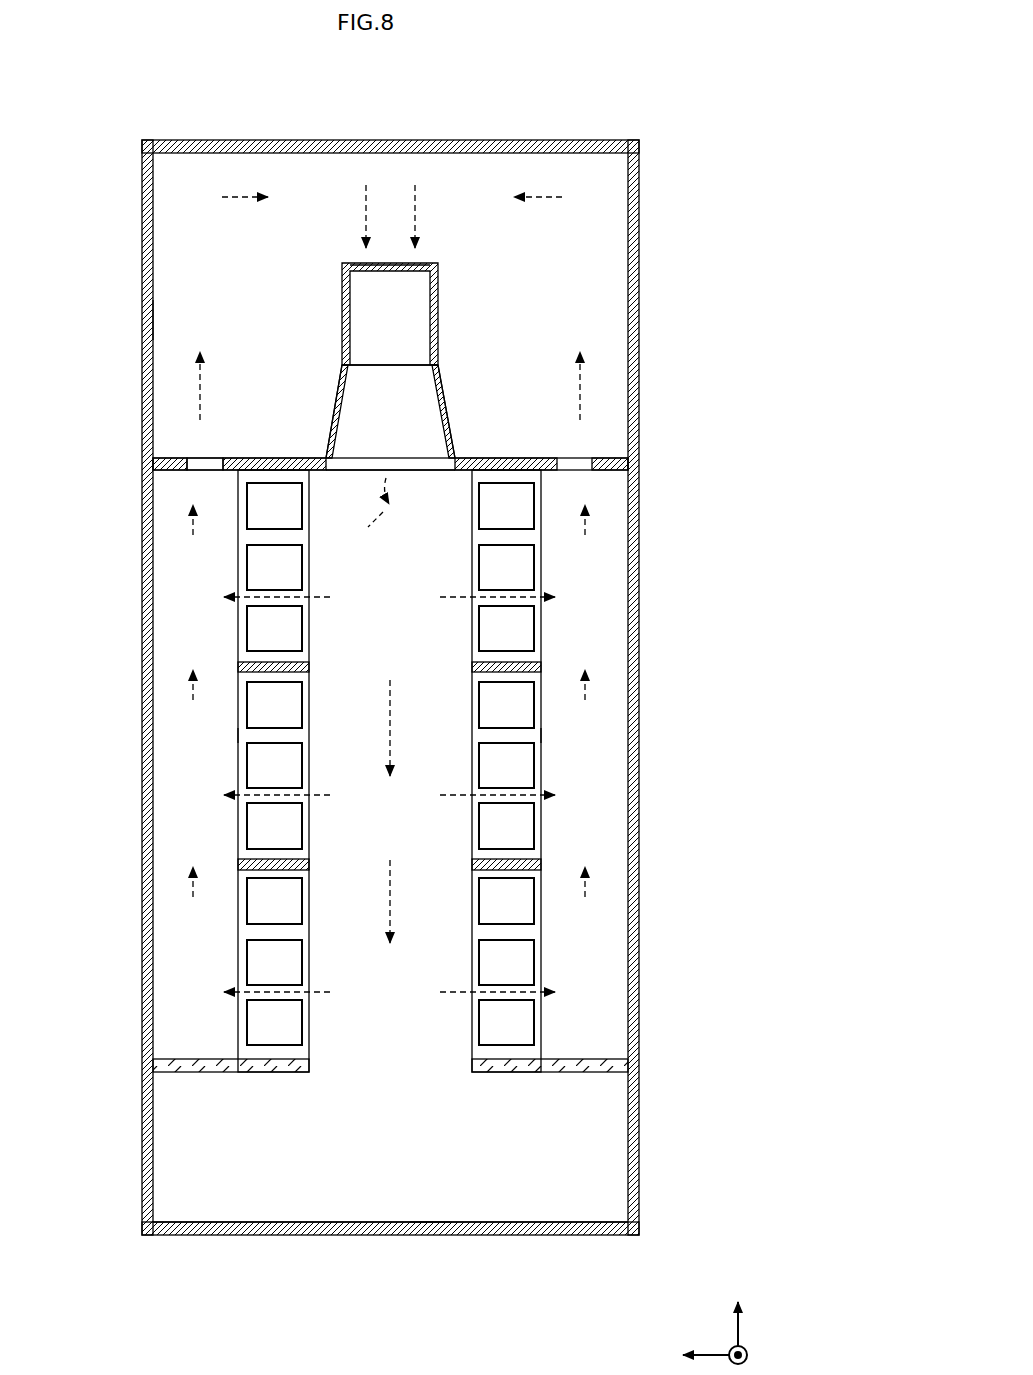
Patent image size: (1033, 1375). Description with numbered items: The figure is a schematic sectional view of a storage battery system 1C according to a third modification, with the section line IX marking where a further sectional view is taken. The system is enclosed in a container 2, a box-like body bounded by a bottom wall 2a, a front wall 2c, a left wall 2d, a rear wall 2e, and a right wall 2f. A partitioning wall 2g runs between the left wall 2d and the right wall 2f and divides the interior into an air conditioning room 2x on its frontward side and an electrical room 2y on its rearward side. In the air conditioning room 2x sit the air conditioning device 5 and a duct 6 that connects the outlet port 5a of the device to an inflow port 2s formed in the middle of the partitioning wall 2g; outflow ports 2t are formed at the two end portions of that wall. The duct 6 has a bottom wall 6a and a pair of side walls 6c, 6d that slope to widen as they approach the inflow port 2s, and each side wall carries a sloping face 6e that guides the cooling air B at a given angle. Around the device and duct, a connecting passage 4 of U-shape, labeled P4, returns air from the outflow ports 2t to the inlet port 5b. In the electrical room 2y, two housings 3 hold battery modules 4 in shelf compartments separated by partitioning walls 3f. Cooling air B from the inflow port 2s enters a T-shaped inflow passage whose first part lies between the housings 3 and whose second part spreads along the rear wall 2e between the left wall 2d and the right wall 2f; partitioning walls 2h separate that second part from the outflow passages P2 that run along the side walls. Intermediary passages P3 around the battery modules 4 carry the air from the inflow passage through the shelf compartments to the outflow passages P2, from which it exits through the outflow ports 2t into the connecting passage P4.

The storage battery system 1C is at (99, 122).
The container 2 is at (598, 140).
The bottom wall 2a is at (350, 1206).
The front wall 2c is at (228, 140).
The left wall 2d is at (143, 511).
The rear wall 2e is at (228, 1237).
The right wall 2f is at (640, 486).
The partitioning wall 2g is at (258, 455).
The partitioning wall 2h is at (190, 1058).
The inflow port 2s is at (435, 478).
The outflow port 2t is at (205, 470).
The air conditioning room 2x is at (169, 318).
The electrical room 2y is at (431, 1203).
The housing 3 is at (237, 945).
The partitioning wall 3f is at (537, 660).
The battery module 4 is at (255, 570).
The air conditioning device 5 is at (434, 262).
The outlet port 5a is at (362, 367).
The inlet port 5b is at (390, 262).
The duct 6 is at (446, 384).
The bottom wall 6a is at (441, 405).
The side wall 6c is at (326, 437).
The side wall 6d is at (452, 430).
The sloping face 6e is at (342, 365).
The outflow passage P2 is at (170, 660).
The intermediary passage P3 is at (527, 932).
The connecting passage P4 is at (193, 228).
The cooling air B is at (370, 516).
The IX-IX line IX is at (390, 128).